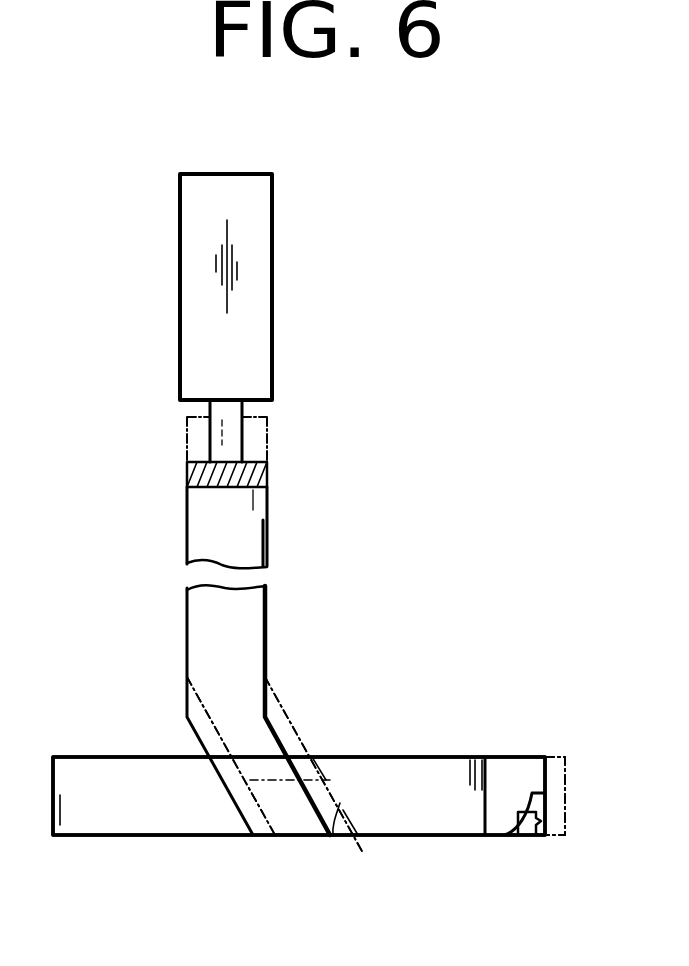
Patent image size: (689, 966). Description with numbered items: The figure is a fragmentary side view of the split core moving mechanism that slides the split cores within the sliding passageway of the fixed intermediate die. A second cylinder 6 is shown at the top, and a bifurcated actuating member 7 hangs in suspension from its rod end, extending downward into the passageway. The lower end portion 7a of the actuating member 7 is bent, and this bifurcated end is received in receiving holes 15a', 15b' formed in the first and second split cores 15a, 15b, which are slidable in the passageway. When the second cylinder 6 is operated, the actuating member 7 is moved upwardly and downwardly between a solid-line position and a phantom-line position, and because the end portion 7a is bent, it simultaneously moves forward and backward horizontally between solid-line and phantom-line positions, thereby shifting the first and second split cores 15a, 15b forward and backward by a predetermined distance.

The second cylinder 6 is at (260, 243).
The bifurcated actuating member 7 is at (272, 523).
The end portion of the actuating member 7a is at (253, 733).
The first split core 15a is at (299, 847).
The second split core 15b is at (299, 796).
The receiving hole 15a' is at (376, 807).
The receiving hole 15b' is at (376, 765).